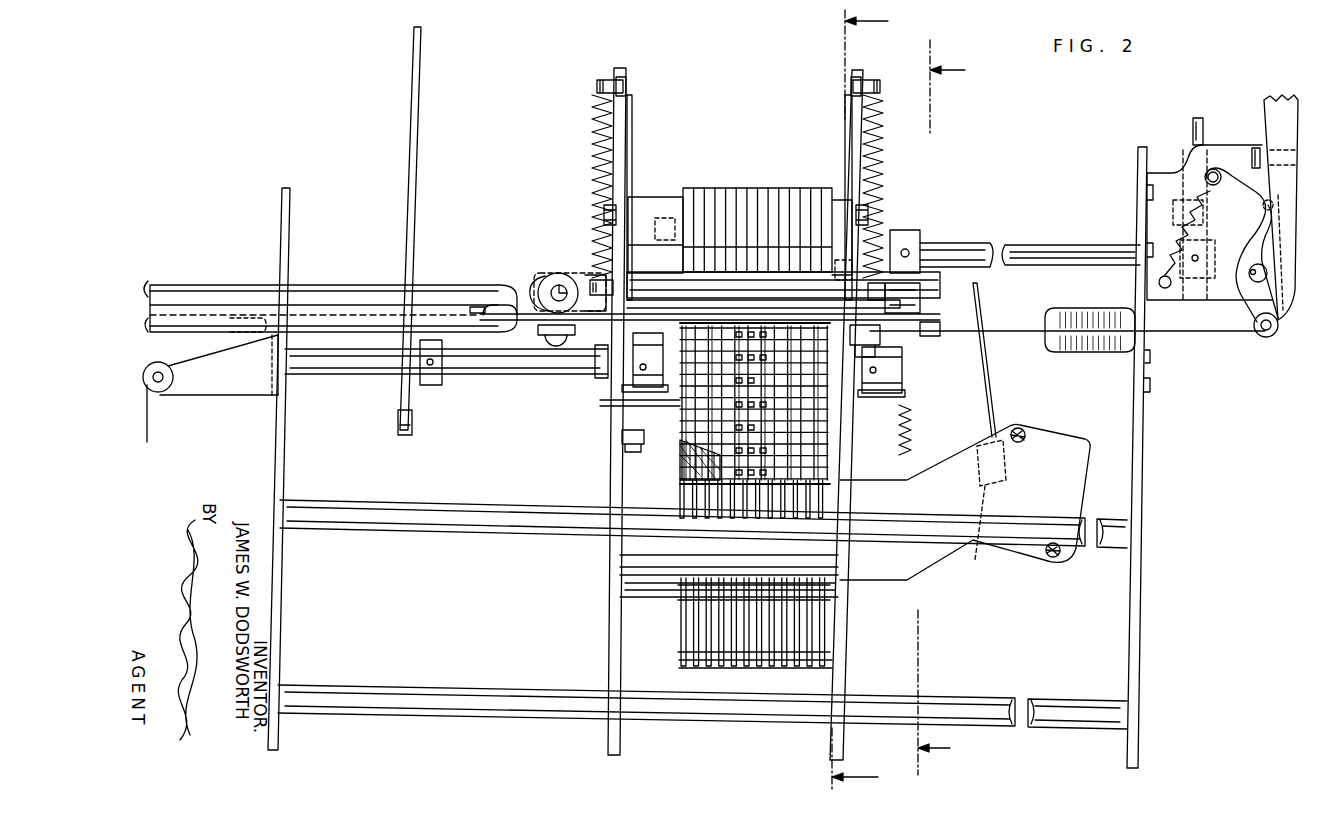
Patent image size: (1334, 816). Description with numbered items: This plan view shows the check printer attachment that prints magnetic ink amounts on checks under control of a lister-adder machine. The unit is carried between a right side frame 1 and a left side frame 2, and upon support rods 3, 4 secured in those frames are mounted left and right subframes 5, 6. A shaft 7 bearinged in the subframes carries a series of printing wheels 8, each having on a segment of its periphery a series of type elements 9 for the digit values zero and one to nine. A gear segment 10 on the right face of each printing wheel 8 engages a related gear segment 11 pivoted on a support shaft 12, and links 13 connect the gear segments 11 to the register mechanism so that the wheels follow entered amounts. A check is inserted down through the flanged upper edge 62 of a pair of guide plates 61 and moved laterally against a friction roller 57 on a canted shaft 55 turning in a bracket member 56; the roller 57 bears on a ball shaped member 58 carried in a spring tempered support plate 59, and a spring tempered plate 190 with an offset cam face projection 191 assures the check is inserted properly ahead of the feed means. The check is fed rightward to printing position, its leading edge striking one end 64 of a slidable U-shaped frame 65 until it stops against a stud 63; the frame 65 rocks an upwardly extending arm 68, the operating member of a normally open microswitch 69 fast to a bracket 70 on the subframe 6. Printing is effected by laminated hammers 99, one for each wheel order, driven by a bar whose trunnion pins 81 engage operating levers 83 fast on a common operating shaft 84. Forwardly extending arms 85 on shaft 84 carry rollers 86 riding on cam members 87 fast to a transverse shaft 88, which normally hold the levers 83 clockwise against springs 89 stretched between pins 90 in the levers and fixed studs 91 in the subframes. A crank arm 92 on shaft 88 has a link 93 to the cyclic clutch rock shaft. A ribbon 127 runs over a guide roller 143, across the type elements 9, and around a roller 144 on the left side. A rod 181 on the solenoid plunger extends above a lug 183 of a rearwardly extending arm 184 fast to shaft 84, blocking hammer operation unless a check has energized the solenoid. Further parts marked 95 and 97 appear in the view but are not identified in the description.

The right side frame 1 is at (1143, 462).
The left side frame 2 is at (286, 462).
The support rod 3 is at (440, 698).
The support rod 4 is at (500, 522).
The left subframe 5 is at (612, 590).
The right subframe 6 is at (842, 656).
The shaft 7 is at (640, 404).
The printing wheel 8 is at (830, 466).
The type element 9 is at (690, 430).
The gear segment 10 is at (680, 460).
The gear segment 11 is at (740, 520).
The support shaft 12 is at (665, 592).
The link 13 is at (810, 666).
The shaft 55 is at (546, 278).
The bracket member 56 is at (598, 306).
The friction roller 57 is at (530, 284).
The ball shaped member 58 is at (536, 334).
The spring tempered support plate 59 is at (560, 341).
The guide plate 61 is at (600, 362).
The flanged upper edge 62 is at (150, 296).
The stud 63 is at (872, 330).
The end of U-shaped frame 64 is at (810, 318).
The U-shaped frame 65 is at (922, 300).
The upwardly extending arm 68 is at (986, 322).
The microswitch 69 is at (1076, 447).
The bracket 70 is at (940, 553).
The trunnion pin 81 is at (603, 215).
The operating lever 83 is at (632, 97).
The operating shaft 84 is at (1018, 250).
The forwardly extending arm 85 is at (655, 235).
The roller 86 is at (848, 280).
The cam member 87 is at (620, 390).
The transverse shaft 88 is at (560, 363).
The spring 89 is at (592, 130).
The pin 90 is at (597, 86).
The fixed stud 91 is at (590, 284).
The crank arm 92 is at (426, 386).
The link 93 is at (412, 195).
The carriage beam 95 is at (696, 300).
The bearing block 97 is at (670, 340).
The printing hammer 99 is at (760, 190).
The ribbon 127 is at (1000, 333).
The guide roller 143 is at (1278, 330).
The roller 144 is at (163, 393).
The rod 181 is at (1205, 130).
The lug 183 is at (1212, 208).
The rearwardly extending arm 184 is at (1177, 170).
The spring tempered plate 190 is at (486, 305).
The offset cam face projection 191 is at (482, 304).